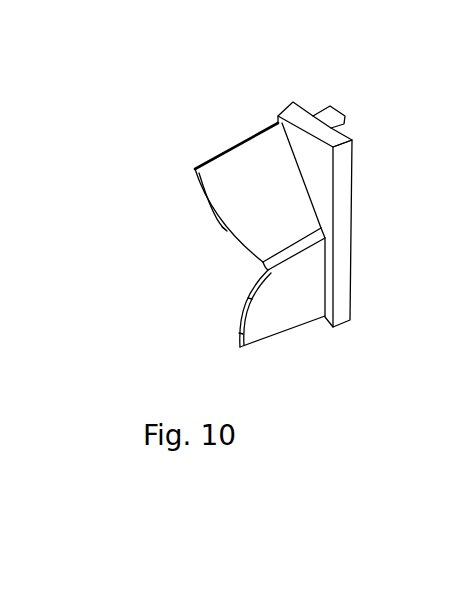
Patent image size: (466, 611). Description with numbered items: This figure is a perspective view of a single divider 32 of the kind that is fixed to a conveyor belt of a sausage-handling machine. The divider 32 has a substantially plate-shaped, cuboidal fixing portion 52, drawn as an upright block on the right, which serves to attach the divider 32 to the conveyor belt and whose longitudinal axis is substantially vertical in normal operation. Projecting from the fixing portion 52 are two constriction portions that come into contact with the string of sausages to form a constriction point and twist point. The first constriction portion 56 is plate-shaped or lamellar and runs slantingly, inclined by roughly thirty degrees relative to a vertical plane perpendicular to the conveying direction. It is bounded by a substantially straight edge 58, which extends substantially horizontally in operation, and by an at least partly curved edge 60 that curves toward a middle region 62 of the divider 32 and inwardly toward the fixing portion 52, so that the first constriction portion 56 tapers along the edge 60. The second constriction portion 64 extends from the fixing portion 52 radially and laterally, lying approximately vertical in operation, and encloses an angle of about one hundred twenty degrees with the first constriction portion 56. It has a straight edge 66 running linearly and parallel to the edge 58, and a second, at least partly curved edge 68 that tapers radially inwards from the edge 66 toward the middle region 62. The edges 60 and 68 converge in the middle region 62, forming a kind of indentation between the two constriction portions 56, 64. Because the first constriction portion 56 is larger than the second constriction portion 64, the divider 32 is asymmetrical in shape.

The divider 32 is at (307, 456).
The fixing portion 52 is at (348, 164).
The first constriction portion 56 is at (276, 187).
The straight edge of first constriction portion 58 is at (232, 150).
The curved edge of first constriction portion 60 is at (210, 222).
The middle region 62 is at (370, 222).
The second constriction portion 64 is at (313, 290).
The straight edge of second constriction portion 66 is at (277, 338).
The curved edge of second constriction portion 68 is at (243, 307).